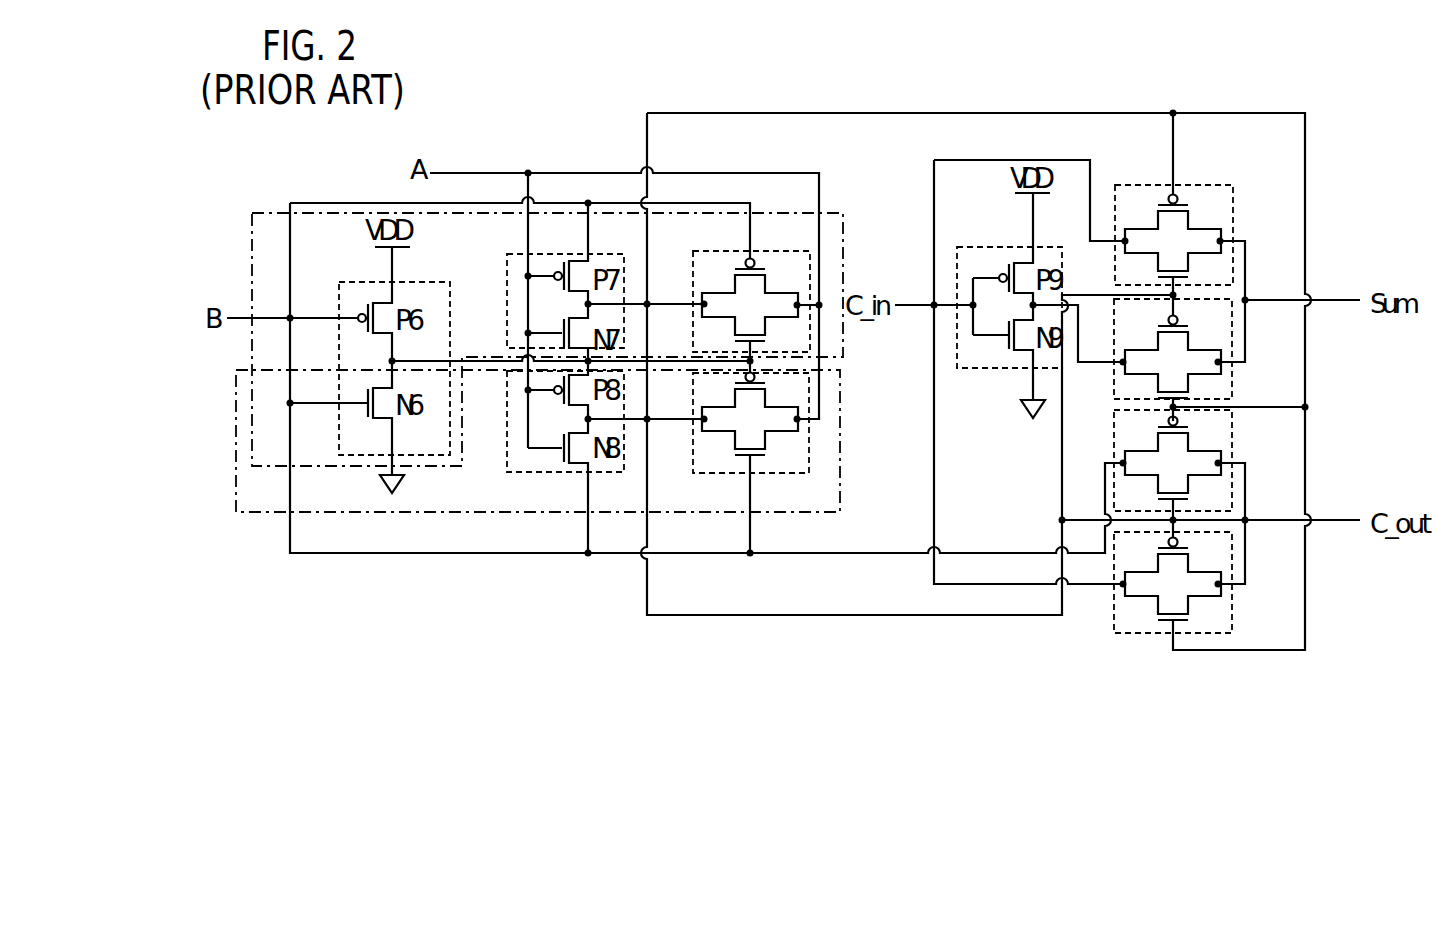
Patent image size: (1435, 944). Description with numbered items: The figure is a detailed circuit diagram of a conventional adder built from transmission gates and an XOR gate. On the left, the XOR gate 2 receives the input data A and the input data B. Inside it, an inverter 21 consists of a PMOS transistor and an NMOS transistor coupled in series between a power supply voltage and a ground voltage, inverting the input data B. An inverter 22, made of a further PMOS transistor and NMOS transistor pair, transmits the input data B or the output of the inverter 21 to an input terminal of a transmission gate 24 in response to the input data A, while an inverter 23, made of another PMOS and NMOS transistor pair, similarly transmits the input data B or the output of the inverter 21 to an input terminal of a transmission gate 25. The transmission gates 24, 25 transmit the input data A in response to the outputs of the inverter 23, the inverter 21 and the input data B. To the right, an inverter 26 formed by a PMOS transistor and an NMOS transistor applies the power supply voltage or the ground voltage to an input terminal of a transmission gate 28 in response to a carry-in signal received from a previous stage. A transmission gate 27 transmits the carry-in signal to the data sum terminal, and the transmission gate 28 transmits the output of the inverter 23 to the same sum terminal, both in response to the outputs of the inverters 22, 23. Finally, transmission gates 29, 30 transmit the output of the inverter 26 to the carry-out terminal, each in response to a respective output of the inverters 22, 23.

The XOR gate 2 is at (250, 340).
The inverter 21 is at (399, 281).
The inverter 22 is at (507, 291).
The inverter 23 is at (507, 437).
The transmission gate 24 is at (765, 250).
The transmission gate 25 is at (763, 475).
The inverter 26 is at (985, 247).
The transmission gate 27 is at (1235, 198).
The transmission gate 28 is at (1235, 378).
The transmission gate 29 is at (1235, 438).
The transmission gate 30 is at (1235, 618).